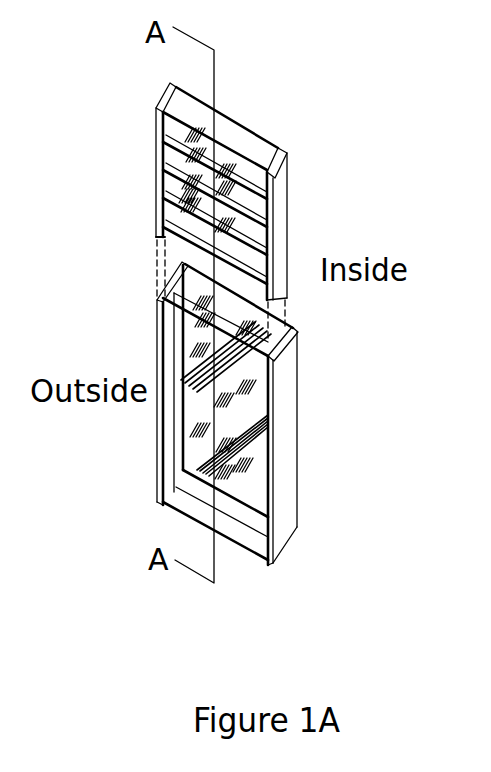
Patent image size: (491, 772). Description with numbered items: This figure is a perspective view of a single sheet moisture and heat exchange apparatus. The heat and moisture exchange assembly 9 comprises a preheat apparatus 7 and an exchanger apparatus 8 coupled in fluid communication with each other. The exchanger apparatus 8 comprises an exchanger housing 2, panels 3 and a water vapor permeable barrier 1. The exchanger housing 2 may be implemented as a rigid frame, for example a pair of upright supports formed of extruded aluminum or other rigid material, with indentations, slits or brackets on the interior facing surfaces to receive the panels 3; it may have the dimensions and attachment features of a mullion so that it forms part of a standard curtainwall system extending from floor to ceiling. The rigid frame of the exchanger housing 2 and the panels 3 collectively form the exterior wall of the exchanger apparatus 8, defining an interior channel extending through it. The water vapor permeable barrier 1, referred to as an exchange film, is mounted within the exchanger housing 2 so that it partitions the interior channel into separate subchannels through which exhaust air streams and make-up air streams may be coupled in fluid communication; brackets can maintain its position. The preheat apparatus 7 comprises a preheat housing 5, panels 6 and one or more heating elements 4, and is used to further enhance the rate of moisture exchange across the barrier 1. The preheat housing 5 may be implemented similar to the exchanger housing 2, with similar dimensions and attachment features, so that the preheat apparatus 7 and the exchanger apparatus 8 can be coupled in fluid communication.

The water vapor permeable barrier 1 is at (226, 507).
The exchanger housing 2 is at (302, 441).
The panels 3 is at (255, 303).
The heating element 4 is at (236, 170).
The preheat housing 5 is at (292, 192).
The panels 6 is at (257, 236).
The preheat apparatus 7 is at (152, 171).
The exchanger apparatus 8 is at (152, 345).
The heat and moisture exchange assembly 9 is at (127, 271).